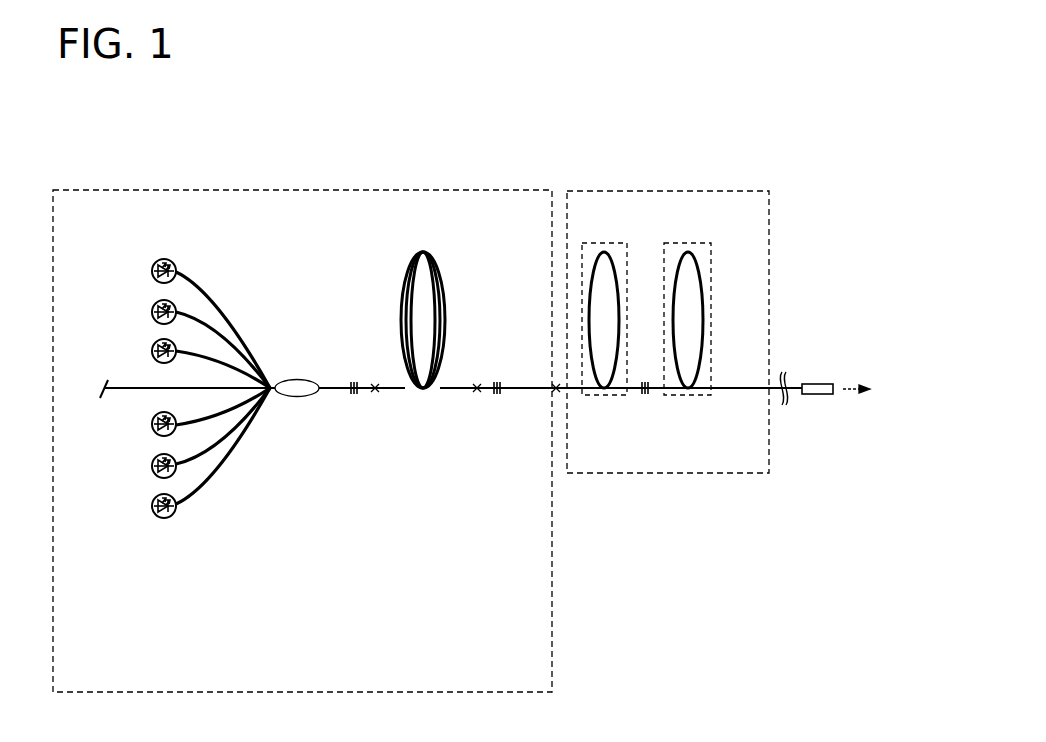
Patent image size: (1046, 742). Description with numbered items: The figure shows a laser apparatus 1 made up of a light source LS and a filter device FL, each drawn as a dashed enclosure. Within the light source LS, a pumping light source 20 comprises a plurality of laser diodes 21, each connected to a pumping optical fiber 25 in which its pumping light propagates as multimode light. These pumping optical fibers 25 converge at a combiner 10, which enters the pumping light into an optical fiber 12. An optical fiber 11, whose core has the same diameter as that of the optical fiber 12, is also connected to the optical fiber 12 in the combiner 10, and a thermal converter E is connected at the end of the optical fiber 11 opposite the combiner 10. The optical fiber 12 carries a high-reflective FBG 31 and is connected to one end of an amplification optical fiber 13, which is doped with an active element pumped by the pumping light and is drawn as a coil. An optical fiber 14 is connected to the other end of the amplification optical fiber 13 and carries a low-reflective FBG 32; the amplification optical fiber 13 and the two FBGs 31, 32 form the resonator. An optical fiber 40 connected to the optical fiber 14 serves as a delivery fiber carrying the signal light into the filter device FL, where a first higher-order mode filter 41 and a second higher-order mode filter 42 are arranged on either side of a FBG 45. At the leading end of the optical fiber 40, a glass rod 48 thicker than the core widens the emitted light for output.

The laser apparatus 1 is at (648, 97).
The combiner 10 is at (304, 396).
The optical fiber 11 is at (148, 387).
The optical fiber 12 is at (340, 387).
The amplification optical fiber 13 is at (402, 308).
The optical fiber 14 is at (527, 387).
The pumping light source 20 is at (201, 596).
The laser diode 21 is at (155, 262).
The pumping optical fiber 25 is at (204, 286).
The high-reflective FBG 31 is at (355, 396).
The low-reflective FBG 32 is at (499, 396).
The optical fiber 40 is at (722, 393).
The first higher-order mode filter 41 is at (630, 258).
The second higher-order mode filter 42 is at (714, 258).
The FBG 45 is at (646, 396).
The glass rod 48 is at (811, 384).
The thermal converter E is at (105, 384).
The light source LS is at (207, 190).
The filter device FL is at (650, 190).